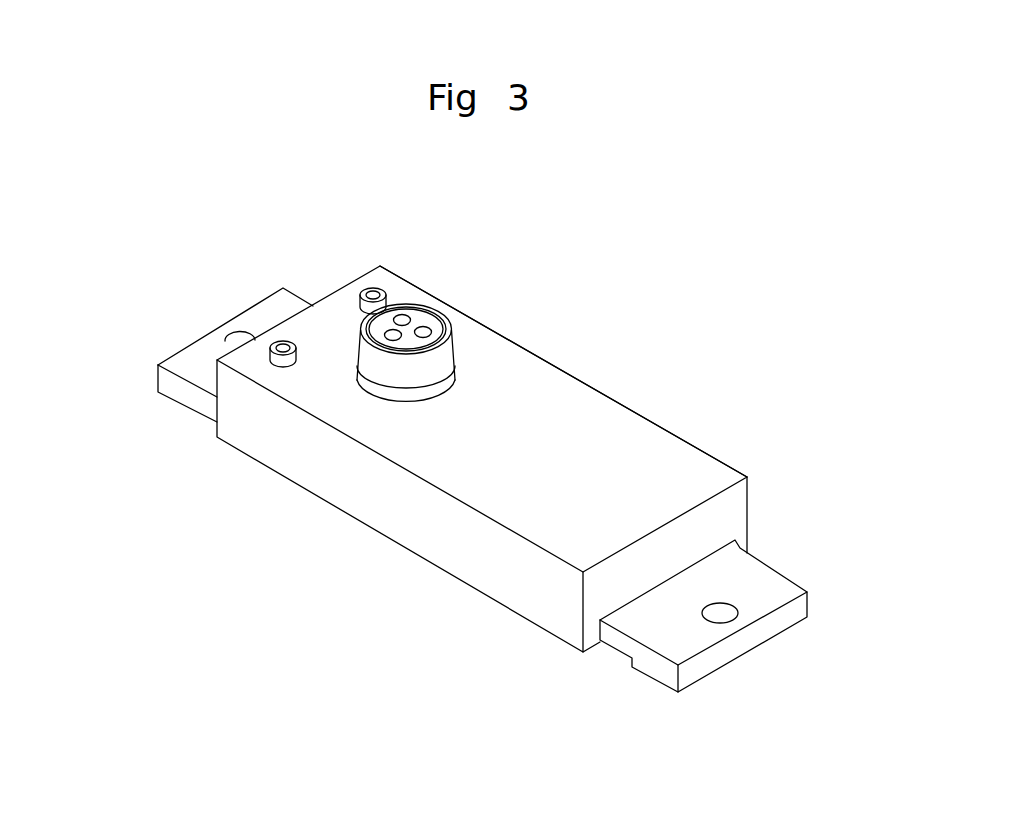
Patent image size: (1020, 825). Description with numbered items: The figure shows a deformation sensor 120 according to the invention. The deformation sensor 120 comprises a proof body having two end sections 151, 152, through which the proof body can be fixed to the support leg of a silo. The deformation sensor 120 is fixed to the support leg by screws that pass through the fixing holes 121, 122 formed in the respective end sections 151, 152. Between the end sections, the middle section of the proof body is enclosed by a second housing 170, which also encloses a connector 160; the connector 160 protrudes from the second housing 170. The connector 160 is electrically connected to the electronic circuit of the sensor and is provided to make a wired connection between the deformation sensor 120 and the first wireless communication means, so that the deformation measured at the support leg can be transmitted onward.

The deformation sensor 120 is at (357, 565).
The fixing hole 121 is at (232, 332).
The fixing hole 122 is at (723, 617).
The end section 151 is at (203, 414).
The end section 152 is at (770, 560).
The connector 160 is at (398, 284).
The second housing 170 is at (565, 410).